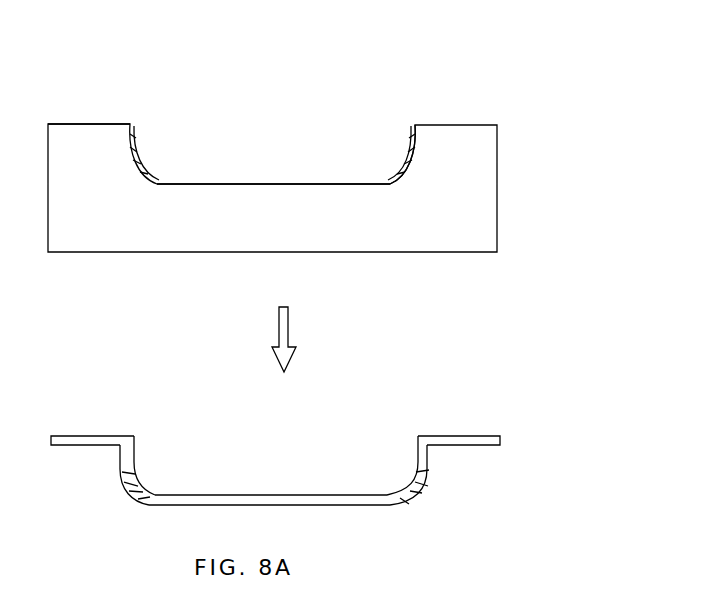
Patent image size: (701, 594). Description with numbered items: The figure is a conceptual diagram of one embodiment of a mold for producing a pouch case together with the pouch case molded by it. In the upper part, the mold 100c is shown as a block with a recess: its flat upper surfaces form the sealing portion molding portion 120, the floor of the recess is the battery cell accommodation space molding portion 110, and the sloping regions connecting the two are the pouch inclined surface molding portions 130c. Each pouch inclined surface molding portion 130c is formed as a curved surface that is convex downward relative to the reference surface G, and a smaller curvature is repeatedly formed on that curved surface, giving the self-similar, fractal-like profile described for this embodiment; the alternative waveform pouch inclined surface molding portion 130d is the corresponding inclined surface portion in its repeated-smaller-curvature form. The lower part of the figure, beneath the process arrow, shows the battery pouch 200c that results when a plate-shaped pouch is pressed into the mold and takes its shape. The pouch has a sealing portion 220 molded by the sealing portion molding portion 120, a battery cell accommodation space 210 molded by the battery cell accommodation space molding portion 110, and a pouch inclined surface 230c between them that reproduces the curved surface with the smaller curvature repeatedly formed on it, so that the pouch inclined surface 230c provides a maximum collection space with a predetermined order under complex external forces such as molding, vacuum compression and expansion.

The mold 100c is at (568, 57).
The sealing portion molding portion 120 is at (86, 121).
The pouch inclined surface molding portion 130c is at (153, 178).
The battery cell accommodation space molding portion 110 is at (187, 181).
The reference surface G is at (403, 142).
The battery pouch 200c is at (570, 360).
The sealing portion 220 is at (88, 432).
The pouch inclined surface 230c is at (117, 472).
The pouch inclined surface molding portion 130d is at (414, 460).
The battery cell accommodation space 210 is at (240, 492).